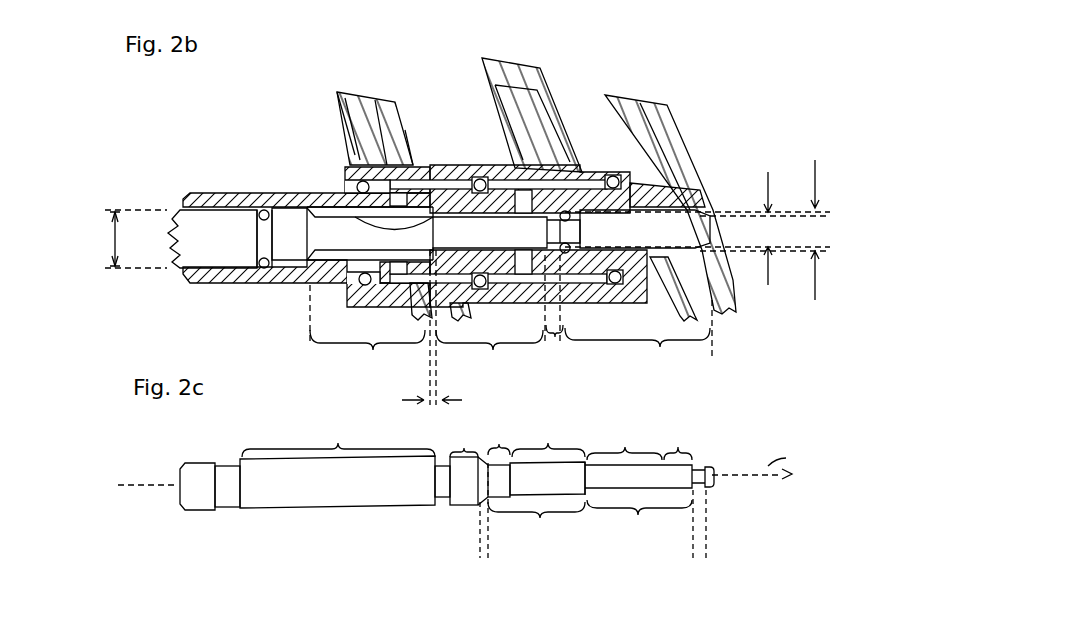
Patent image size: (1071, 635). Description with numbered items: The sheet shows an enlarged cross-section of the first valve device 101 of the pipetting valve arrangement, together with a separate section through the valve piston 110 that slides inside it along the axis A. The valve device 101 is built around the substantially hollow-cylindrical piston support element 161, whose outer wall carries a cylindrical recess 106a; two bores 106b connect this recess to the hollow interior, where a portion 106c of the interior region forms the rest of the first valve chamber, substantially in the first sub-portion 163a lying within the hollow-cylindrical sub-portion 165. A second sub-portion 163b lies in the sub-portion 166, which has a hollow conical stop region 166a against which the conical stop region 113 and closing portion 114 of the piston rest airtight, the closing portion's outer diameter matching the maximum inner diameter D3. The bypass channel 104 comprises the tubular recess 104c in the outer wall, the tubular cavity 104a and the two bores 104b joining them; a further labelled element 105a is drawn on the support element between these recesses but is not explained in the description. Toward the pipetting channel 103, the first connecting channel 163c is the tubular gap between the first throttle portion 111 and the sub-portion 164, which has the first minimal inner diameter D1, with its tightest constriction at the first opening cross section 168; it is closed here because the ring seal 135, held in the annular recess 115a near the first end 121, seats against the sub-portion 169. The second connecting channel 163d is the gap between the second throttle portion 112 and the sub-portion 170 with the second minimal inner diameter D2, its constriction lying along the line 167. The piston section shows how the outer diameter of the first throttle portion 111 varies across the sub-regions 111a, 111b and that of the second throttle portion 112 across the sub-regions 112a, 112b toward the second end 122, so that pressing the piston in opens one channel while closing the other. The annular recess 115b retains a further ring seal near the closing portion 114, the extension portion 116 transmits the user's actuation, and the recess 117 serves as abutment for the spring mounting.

In FIG. 2B, the first valve device 101 is at (191, 126).
In FIG. 2B, the pipetting channel 103 is at (642, 100).
In FIG. 2B, the bypass channel 104 is at (363, 88).
In FIG. 2B, the tubular cavity 104a is at (320, 262).
In FIG. 2B, the bores 104b is at (352, 125).
In FIG. 2B, the tubular recess 104c is at (393, 96).
In FIG. 2B, the clamping arm 105a is at (527, 97).
In FIG. 2B, the cylindrical recess 106a is at (585, 170).
In FIG. 2B, the bores 106b is at (520, 195).
In FIG. 2B, the portion of the interior region 106c is at (480, 178).
In FIG. 2B, the valve piston 110 is at (168, 268).
In FIG. 2C, the valve piston 110 is at (727, 427).
In FIG. 2C, the first throttle portion 111 is at (639, 523).
In FIG. 2C, the first sub-region of the first throttle portion 111a is at (668, 456).
In FIG. 2C, the second sub-region of the first throttle portion 111b is at (623, 460).
In FIG. 2C, the second throttle portion 112 is at (536, 525).
In FIG. 2C, the first sub-region of the second throttle portion 112a is at (486, 461).
In FIG. 2C, the second sub-region of the second throttle portion 112b is at (547, 457).
In FIG. 2C, the conical stop region 113 is at (495, 542).
In FIG. 2C, the closing portion 114 is at (456, 448).
In FIG. 2C, the annular recess 115a is at (710, 540).
In FIG. 2C, the annular recess 115b is at (445, 500).
In FIG. 2C, the extension portion 116 is at (337, 463).
In FIG. 2C, the recess 117 is at (228, 510).
In FIG. 2C, the first end 121 is at (713, 487).
In FIG. 2C, the second end 122 is at (180, 492).
In FIG. 2B, the ring seal 135 is at (620, 136).
In FIG. 2B, the piston support element 161 is at (290, 192).
In FIG. 2B, the first sub-portion of the interior region 163a is at (466, 318).
In FIG. 2B, the second sub-portion of the interior region 163b is at (334, 286).
In FIG. 2B, the first connecting channel 163c is at (560, 255).
In FIG. 2B, the second connecting channel 163d is at (317, 205).
In FIG. 2B, the first sub-portion of the piston support element 164 is at (562, 353).
In FIG. 2B, the hollow-cylindrical sub-portion 165 is at (498, 316).
In FIG. 2B, the sub-portion of the piston support element 166 is at (373, 327).
In FIG. 2B, the hollow conical stop region 166a is at (420, 153).
In FIG. 2B, the line 167 is at (423, 381).
In FIG. 2B, the first opening cross section 168 is at (570, 343).
In FIG. 2B, the sub-portion of the piston support element 169 is at (638, 334).
In FIG. 2B, the second sub-portion of the piston support element 170 is at (433, 385).
In FIG. 2B, the first minimal inner diameter D1 is at (766, 217).
In FIG. 2B, the second minimal inner diameter D2 is at (816, 217).
In FIG. 2B, the maximum inner diameter D3 is at (105, 239).
In FIG. 2C, the axis A is at (794, 457).